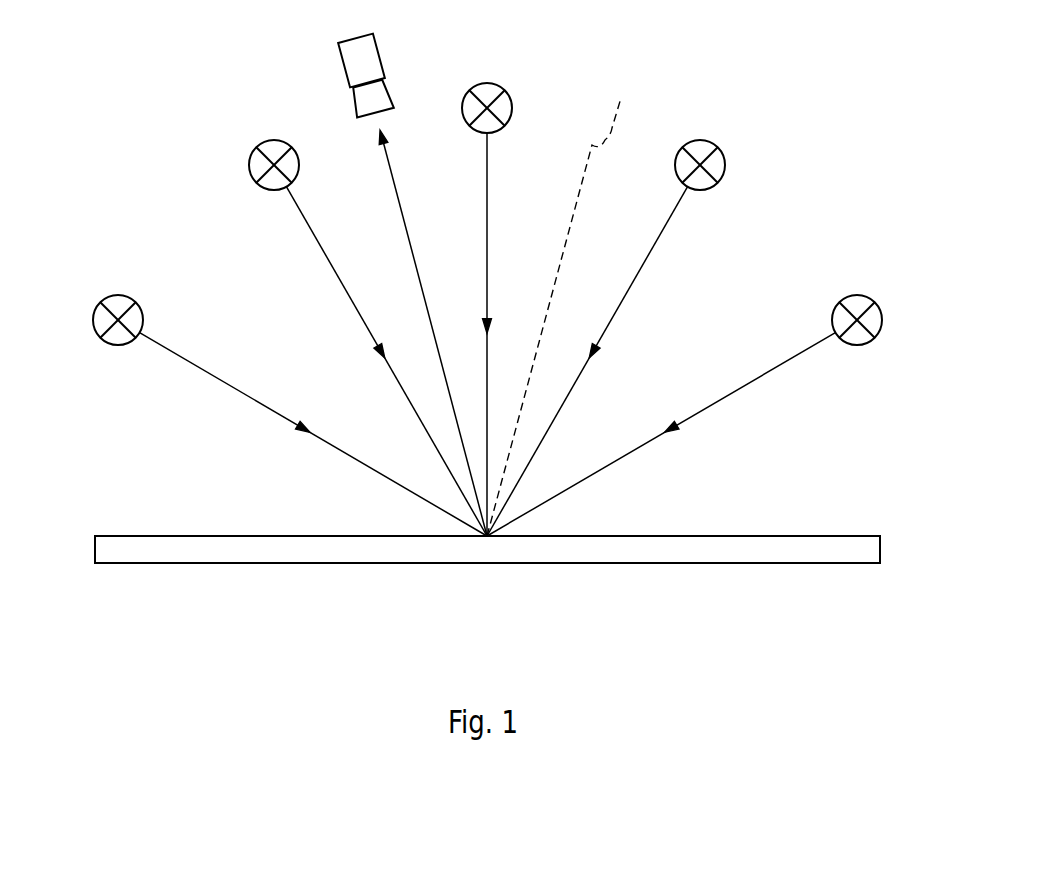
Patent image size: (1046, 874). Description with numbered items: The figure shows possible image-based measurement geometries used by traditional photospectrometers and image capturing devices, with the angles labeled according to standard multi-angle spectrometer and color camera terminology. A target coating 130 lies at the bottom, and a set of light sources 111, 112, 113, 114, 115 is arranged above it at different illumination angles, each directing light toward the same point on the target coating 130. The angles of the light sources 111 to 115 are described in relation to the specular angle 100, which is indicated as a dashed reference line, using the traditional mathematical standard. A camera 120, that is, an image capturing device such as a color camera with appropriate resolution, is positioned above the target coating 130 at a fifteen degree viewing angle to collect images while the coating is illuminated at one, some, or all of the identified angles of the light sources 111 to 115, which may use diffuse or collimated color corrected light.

The specular angle 100 is at (569, 304).
The light source 111 is at (866, 344).
The light source 112 is at (708, 189).
The light source 113 is at (474, 132).
The light source 114 is at (266, 189).
The light source 115 is at (109, 343).
The camera 120 is at (385, 53).
The target coating 130 is at (190, 548).